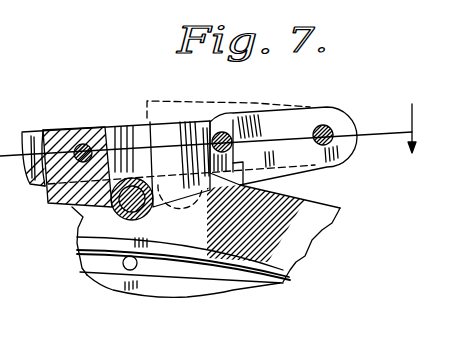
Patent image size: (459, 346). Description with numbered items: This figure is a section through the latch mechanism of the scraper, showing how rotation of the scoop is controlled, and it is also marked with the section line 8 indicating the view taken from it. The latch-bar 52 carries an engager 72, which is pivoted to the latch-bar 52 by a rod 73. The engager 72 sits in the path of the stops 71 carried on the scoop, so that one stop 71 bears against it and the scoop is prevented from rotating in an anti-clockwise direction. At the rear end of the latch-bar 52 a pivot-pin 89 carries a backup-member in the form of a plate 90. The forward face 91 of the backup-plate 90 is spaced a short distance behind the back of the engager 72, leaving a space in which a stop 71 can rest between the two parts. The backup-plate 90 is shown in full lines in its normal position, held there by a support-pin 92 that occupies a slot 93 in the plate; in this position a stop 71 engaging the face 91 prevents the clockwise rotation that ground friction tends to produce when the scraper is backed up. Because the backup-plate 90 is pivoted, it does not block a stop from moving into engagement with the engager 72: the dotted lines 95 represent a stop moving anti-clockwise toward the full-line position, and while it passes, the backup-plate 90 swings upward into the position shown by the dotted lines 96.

The section line 8- 8 is at (218, 120).
The latch-bar 52 is at (30, 146).
The stop 71 is at (120, 214).
The engager 72 is at (77, 189).
The rod 73 is at (86, 143).
The pivot-pin 89 is at (331, 128).
The backup-plate 90 is at (253, 118).
The forward face 91 is at (147, 135).
The support-pin 92 is at (228, 131).
The slot 93 is at (240, 167).
The dotted lines 95 is at (180, 220).
The dotted lines 96 is at (167, 99).